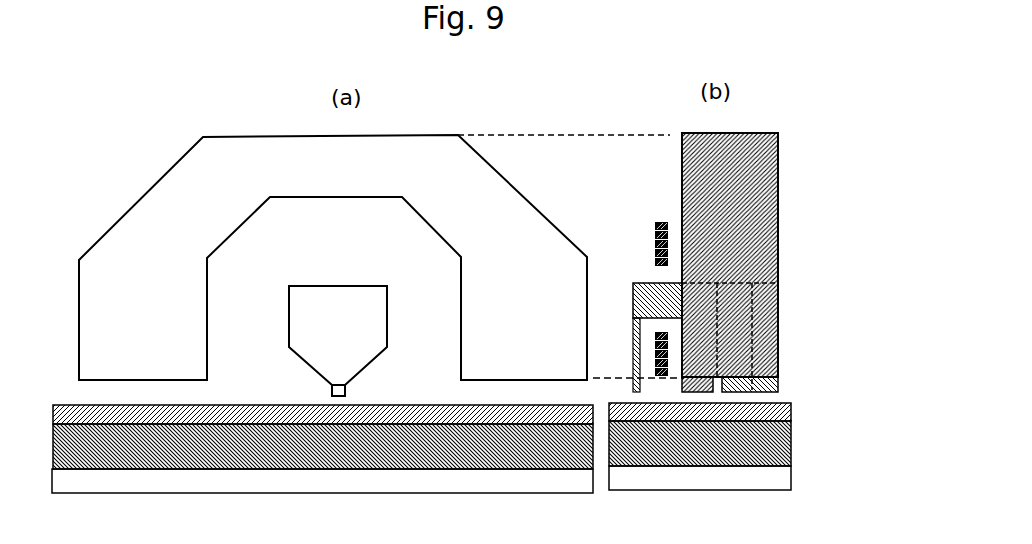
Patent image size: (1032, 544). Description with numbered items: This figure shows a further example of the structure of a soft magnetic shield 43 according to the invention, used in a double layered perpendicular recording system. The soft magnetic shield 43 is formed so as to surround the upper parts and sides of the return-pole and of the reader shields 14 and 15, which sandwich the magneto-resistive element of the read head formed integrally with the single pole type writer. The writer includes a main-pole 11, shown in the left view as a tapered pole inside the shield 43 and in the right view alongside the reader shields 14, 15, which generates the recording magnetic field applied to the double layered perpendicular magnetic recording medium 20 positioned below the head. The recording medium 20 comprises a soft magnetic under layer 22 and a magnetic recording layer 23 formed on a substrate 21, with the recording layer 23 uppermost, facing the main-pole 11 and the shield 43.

The soft magnetic shield 43 is at (182, 175).
The main-pole 11 is at (358, 367).
The reader shield 15 is at (740, 323).
The reader shield 14 is at (781, 380).
The magnetic recording layer 23 is at (792, 408).
The soft magnetic under layer 22 is at (772, 435).
The substrate 21 is at (441, 479).
The double layered perpendicular magnetic recording medium 20 is at (470, 446).